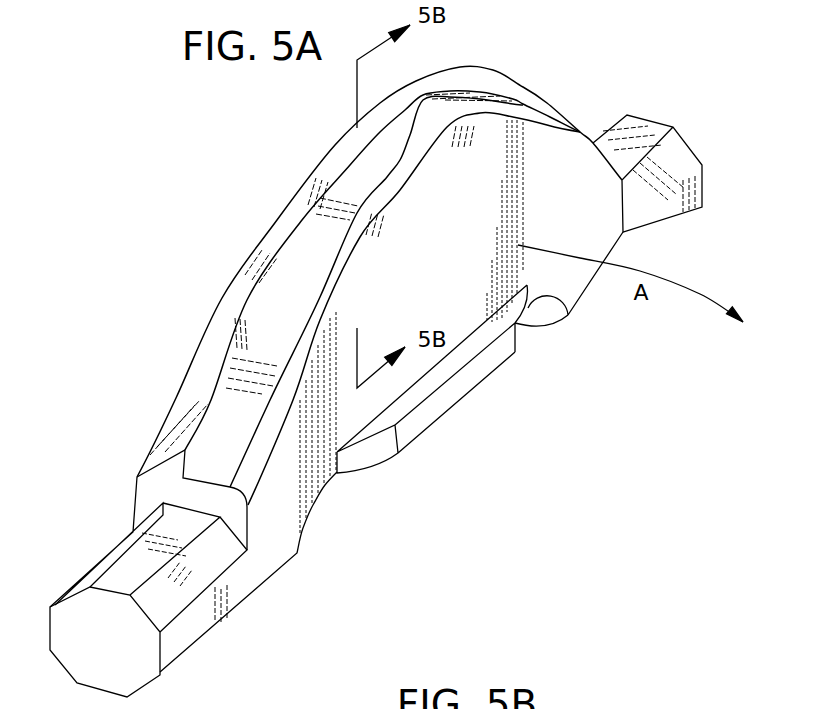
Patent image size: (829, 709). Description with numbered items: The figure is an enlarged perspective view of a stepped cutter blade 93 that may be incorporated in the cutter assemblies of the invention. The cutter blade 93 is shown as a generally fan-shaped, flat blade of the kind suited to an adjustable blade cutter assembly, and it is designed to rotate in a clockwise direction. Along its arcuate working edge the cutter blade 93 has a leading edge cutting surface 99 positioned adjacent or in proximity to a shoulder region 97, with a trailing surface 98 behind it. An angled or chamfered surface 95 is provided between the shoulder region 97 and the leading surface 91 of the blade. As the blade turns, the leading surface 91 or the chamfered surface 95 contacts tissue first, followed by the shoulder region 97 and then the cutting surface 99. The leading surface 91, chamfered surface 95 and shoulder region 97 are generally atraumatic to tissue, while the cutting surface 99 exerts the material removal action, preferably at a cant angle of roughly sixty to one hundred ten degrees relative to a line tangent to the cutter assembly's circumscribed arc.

The leading surface 91 is at (413, 295).
The cutter blade 93 is at (333, 147).
The chamfered surface 95 is at (250, 478).
The shoulder region 97 is at (322, 233).
The trailing surface 98 is at (208, 363).
The leading edge cutting surface 99 is at (475, 76).